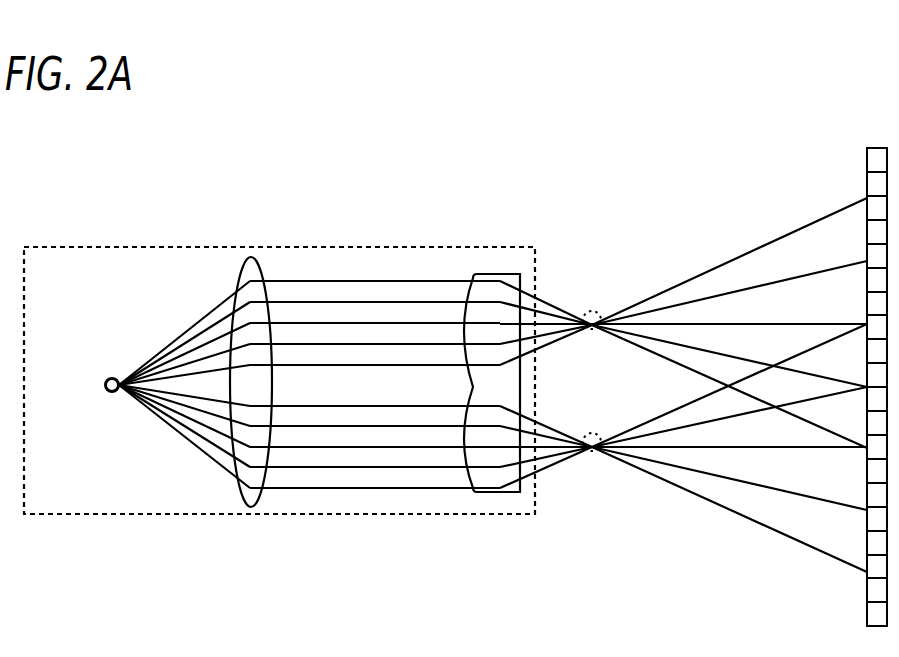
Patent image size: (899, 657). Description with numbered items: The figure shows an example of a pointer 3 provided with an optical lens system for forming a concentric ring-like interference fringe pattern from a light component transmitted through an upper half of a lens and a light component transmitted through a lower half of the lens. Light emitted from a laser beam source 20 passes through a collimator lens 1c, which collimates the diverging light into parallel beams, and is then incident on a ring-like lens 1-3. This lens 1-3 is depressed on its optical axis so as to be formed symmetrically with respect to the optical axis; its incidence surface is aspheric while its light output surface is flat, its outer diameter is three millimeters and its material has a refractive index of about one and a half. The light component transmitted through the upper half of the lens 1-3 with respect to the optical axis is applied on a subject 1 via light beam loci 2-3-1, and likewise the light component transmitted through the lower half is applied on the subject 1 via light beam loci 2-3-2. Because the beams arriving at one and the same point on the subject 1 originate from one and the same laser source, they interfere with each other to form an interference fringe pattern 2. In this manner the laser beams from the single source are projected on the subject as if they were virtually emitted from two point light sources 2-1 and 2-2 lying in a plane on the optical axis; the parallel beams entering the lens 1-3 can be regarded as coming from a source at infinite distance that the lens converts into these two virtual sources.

The subject 1 is at (867, 160).
The collimator lens 1c is at (250, 257).
The ring-like lens 1-3 is at (497, 274).
The interference fringe pattern 2 is at (863, 323).
The point light source 2-1 is at (590, 331).
The point light source 2-2 is at (590, 453).
The light beam loci 2-3-1 is at (682, 283).
The light beam loci 2-3-2 is at (707, 500).
The pointer 3 is at (163, 514).
The laser beam source 20 is at (112, 378).